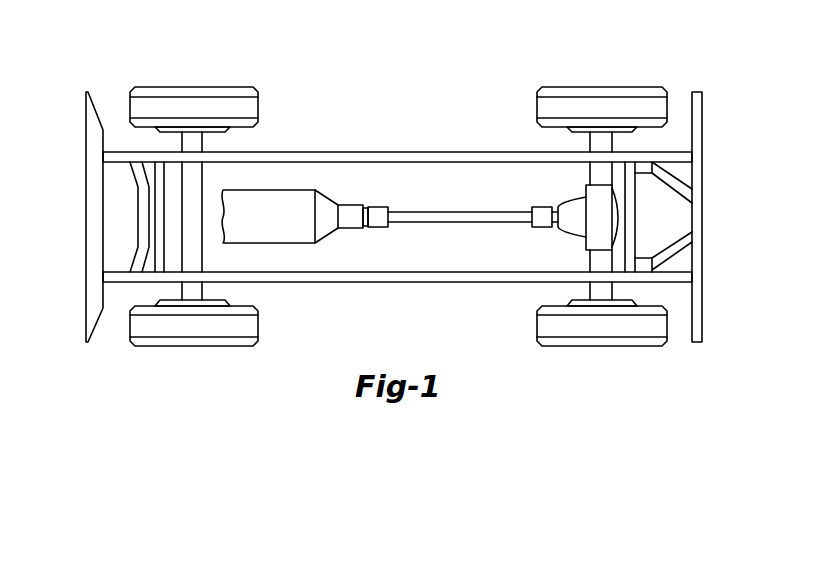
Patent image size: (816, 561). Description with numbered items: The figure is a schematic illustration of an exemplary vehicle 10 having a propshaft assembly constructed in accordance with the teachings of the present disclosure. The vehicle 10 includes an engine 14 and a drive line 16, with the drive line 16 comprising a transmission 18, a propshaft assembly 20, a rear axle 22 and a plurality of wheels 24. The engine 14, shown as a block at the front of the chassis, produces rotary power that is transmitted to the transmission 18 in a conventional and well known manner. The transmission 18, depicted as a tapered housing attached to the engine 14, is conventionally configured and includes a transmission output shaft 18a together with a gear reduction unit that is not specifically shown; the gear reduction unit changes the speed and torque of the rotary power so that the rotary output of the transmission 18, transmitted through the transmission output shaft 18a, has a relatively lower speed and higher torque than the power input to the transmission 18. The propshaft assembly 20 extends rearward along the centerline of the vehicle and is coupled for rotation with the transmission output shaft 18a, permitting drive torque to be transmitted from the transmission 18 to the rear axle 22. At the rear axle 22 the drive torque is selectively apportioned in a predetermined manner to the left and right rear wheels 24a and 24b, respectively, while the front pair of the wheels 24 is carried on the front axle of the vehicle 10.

The vehicle 10 is at (357, 98).
The engine 14 is at (289, 233).
The drive line 16 is at (359, 246).
The transmission 18 is at (332, 203).
The transmission output shaft 18a is at (367, 205).
The propshaft assembly 20 is at (483, 207).
The rear axle 22 is at (580, 242).
The wheels 24 is at (170, 350).
The left rear wheel 24a is at (548, 322).
The right rear wheel 24b is at (601, 98).